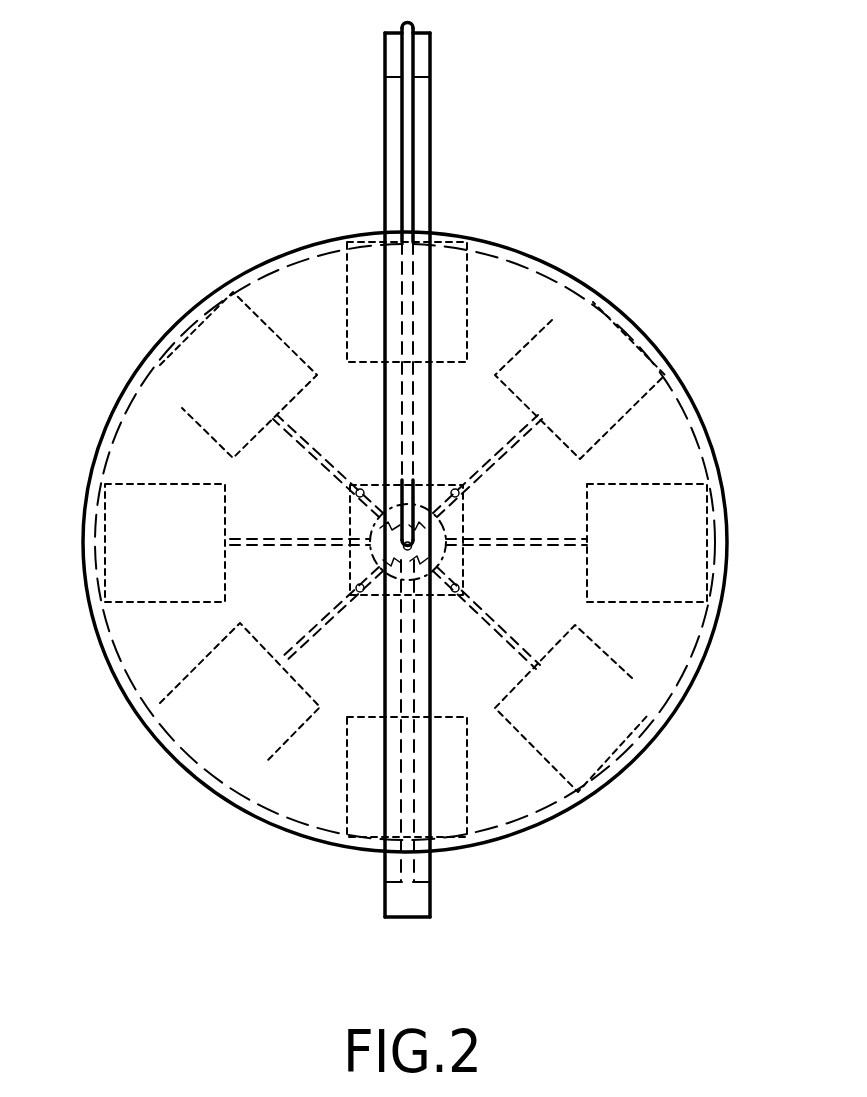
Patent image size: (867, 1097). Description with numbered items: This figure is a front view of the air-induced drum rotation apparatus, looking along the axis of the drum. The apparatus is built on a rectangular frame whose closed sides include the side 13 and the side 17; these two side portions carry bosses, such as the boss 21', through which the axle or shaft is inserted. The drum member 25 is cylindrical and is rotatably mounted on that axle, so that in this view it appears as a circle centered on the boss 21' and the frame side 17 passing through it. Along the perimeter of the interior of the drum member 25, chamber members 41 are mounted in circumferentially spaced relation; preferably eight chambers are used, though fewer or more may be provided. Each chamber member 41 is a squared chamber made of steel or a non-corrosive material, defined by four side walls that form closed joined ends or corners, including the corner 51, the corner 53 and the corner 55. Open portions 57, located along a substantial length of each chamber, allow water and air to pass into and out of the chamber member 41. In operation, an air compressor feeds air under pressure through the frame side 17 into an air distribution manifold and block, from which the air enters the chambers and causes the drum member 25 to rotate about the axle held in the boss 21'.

The side 13 is at (402, 541).
The side 17 is at (420, 148).
The boss 21' is at (603, 542).
The drum member 25 is at (698, 679).
The chamber member 41 is at (600, 345).
The corner 51 is at (233, 292).
The corner 53 is at (316, 372).
The corner 55 is at (233, 458).
The open portion 57 is at (167, 380).